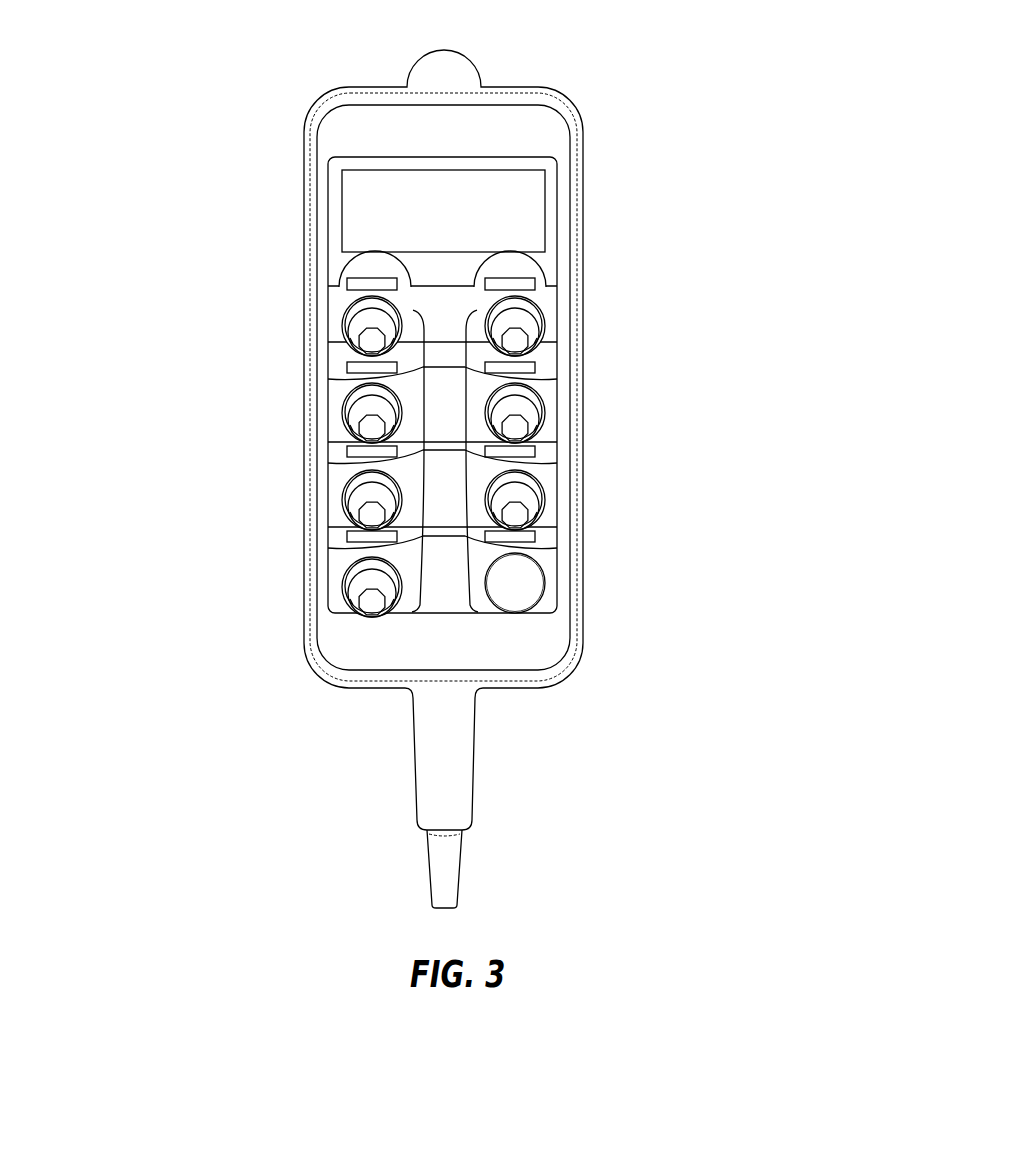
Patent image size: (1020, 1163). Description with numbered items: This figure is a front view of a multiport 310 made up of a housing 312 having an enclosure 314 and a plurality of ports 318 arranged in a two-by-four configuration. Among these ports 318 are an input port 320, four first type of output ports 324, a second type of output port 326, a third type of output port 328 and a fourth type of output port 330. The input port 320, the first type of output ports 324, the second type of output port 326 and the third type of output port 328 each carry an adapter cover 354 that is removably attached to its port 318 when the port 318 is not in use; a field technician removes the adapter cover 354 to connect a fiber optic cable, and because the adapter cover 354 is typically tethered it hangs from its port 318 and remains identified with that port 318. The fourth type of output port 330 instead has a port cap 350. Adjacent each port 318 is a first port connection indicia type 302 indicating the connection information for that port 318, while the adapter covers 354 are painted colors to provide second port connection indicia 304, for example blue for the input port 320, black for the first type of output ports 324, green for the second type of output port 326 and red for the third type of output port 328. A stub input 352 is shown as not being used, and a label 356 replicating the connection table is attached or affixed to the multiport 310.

The multiport 310 is at (454, 415).
The housing 312 is at (588, 145).
The enclosure 314 is at (312, 108).
The label 356 is at (547, 192).
The first port connection indicia type 302 is at (346, 284).
The second port connection indicia 304 is at (345, 302).
The adapter cover 354 is at (342, 337).
The first type of output port 324 is at (346, 420).
The second type of output port 326 is at (366, 342).
The third type of output port 328 is at (546, 322).
The port cap 350 is at (546, 576).
The fourth type of output port 330 is at (542, 596).
The input port 320 is at (340, 606).
The port 318 is at (428, 450).
The stub input 352 is at (476, 730).